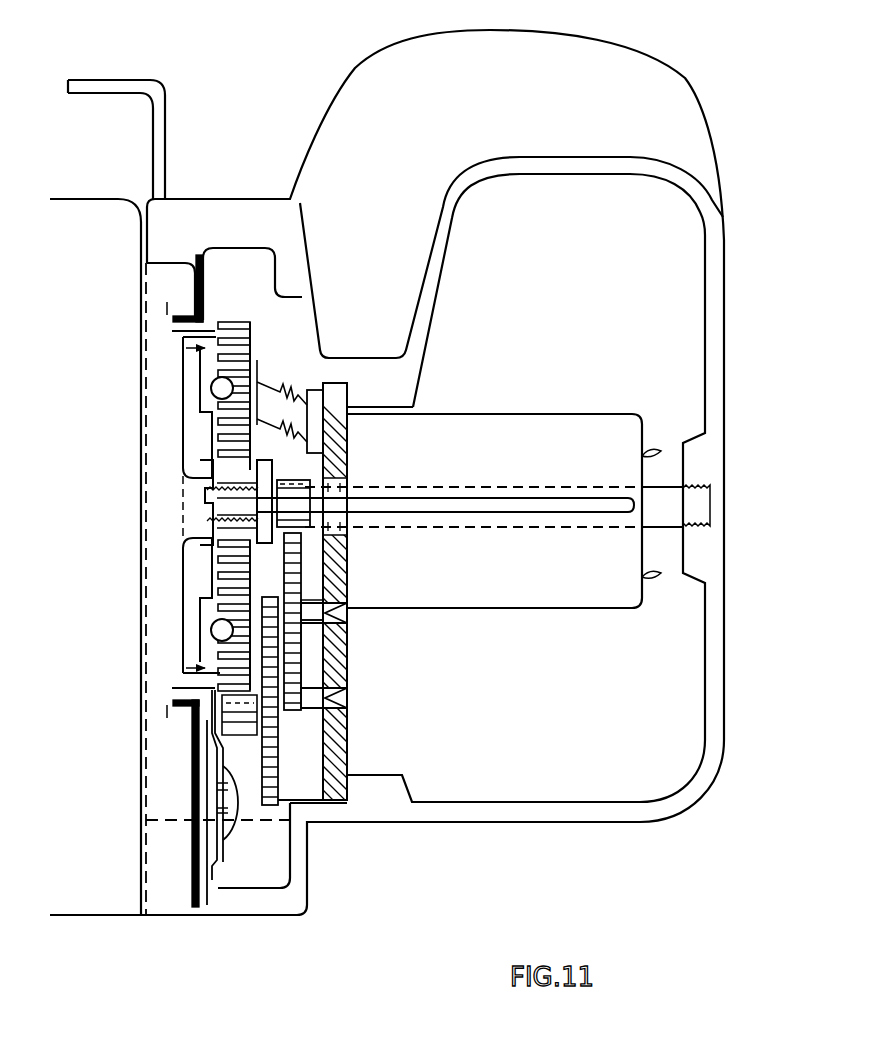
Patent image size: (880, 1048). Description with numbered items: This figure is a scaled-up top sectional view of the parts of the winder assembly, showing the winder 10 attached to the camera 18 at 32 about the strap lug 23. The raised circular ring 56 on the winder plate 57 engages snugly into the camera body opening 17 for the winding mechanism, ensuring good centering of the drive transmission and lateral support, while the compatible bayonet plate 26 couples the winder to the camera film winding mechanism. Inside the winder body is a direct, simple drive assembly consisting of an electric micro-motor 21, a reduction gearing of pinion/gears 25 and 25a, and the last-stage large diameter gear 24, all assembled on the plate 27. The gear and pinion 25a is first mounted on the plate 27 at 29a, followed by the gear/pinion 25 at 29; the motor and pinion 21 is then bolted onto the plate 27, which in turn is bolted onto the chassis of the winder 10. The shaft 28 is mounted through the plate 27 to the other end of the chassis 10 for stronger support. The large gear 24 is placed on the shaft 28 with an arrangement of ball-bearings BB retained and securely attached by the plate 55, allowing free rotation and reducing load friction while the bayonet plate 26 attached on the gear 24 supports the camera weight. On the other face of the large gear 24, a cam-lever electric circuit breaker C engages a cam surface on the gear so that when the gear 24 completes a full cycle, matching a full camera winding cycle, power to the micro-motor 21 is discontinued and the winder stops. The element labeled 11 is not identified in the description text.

The winder 10 is at (190, 206).
The mounting plate 11 is at (132, 87).
The camera body opening 17 is at (182, 312).
The camera 18 is at (118, 205).
The electric micro-motor 21 is at (477, 415).
The strap lug 23 is at (231, 808).
The large gear 24 is at (242, 378).
The gear/pinion 25 is at (277, 781).
The gear and pinion 25a is at (302, 656).
The bayonet plate 26 is at (185, 402).
The plate 27 is at (348, 800).
The shaft 28 is at (335, 540).
The mounting location of gear/pinion 29 is at (338, 706).
The mounting location of gear and pinion 29a is at (338, 619).
The securing location on camera 32 is at (186, 292).
The plate 55 is at (205, 453).
The raised circular ring 56 is at (177, 328).
The winder plate 57 is at (205, 290).
The ball-bearings BB is at (232, 385).
The cam-lever electric circuit breaker C is at (290, 386).